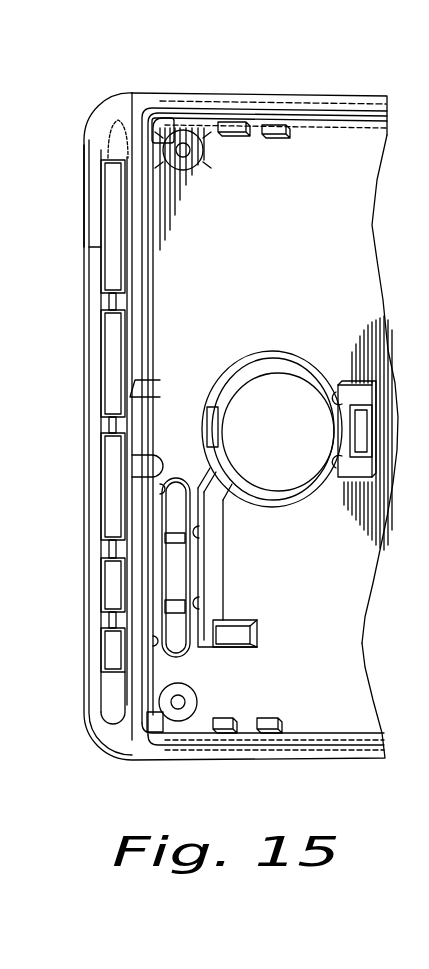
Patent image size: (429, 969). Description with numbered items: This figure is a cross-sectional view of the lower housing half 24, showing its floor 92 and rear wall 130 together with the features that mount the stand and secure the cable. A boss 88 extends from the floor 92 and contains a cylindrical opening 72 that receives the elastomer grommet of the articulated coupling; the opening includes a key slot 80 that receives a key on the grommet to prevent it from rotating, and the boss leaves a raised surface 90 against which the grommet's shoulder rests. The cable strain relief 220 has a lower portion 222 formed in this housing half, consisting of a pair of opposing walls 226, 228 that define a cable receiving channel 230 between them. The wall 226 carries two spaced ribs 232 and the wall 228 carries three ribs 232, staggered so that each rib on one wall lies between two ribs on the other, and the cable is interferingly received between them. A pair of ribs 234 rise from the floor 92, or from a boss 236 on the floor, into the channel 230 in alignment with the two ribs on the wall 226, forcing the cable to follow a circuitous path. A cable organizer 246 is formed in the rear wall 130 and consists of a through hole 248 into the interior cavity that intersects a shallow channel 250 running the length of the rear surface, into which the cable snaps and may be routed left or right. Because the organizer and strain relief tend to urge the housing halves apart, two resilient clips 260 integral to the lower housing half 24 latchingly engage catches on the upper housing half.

The lower housing half 24 is at (305, 92).
The floor 92 is at (340, 168).
The resilient clips 260 is at (258, 127).
The shallow channel 250 is at (132, 155).
The cable organizer 246 is at (92, 190).
The rear wall 130 is at (88, 230).
The boss 236 is at (182, 470).
The through hole 248 is at (137, 423).
The ribs 232 is at (157, 494).
The wall 228 is at (155, 538).
The ribs 234 is at (172, 607).
The wall 226 is at (190, 482).
The boss 88 is at (281, 352).
The cylindrical opening 72 is at (293, 382).
The key slot 80 is at (216, 429).
The raised surface 90 is at (303, 503).
The cable strain relief 220 is at (255, 590).
The lower portion 222 is at (208, 630).
The cable receiving channel 230 is at (170, 672).